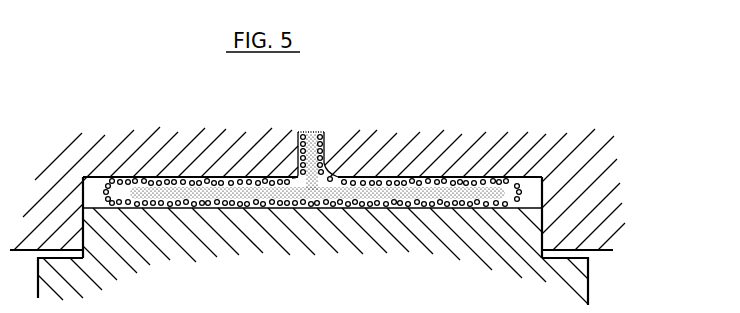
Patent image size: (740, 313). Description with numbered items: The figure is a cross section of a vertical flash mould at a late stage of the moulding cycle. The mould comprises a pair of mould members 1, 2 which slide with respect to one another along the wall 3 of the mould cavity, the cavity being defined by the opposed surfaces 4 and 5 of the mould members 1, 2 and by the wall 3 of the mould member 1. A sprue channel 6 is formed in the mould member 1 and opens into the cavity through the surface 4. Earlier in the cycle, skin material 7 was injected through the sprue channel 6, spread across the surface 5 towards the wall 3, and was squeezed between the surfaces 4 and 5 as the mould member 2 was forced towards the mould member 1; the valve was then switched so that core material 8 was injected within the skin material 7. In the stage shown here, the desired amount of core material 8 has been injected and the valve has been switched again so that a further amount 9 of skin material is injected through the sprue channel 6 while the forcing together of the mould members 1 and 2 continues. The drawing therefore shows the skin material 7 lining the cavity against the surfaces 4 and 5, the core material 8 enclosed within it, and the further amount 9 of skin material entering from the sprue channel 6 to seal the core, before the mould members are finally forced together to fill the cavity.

The mould member 1 is at (462, 142).
The mould member 2 is at (588, 273).
The wall 3 is at (542, 186).
The surface 4 is at (530, 177).
The surface 5 is at (522, 210).
The sprue channel 6 is at (298, 163).
The skin material 7 is at (418, 177).
The core material 8 is at (350, 192).
The further amount of skin material 9 is at (310, 132).